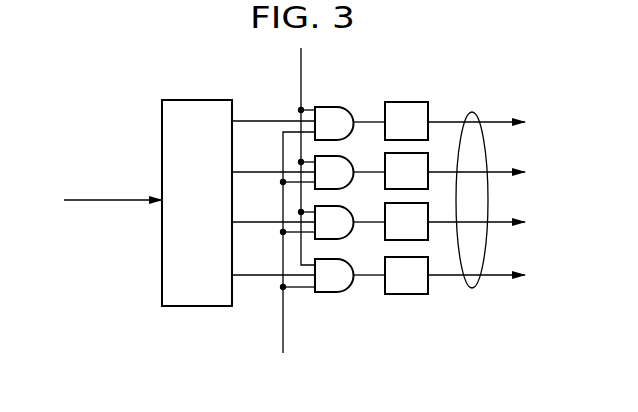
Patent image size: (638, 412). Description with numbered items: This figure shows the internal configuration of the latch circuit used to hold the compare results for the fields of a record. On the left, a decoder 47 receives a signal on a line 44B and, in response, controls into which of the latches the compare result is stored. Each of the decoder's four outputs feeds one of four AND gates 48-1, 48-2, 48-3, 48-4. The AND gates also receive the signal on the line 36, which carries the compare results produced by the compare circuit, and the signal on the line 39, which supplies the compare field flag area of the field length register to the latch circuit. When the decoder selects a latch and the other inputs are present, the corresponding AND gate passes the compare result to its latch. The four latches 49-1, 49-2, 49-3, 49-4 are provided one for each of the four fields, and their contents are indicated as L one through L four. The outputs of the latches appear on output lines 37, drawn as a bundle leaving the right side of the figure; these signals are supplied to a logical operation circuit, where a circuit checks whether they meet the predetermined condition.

The decoder 47 is at (205, 100).
The line 44B is at (107, 201).
The line 36 is at (301, 88).
The line 39 is at (283, 320).
The AND gate 48-1 is at (330, 106).
The AND gate 48-2 is at (350, 156).
The AND gate 48-3 is at (348, 240).
The AND gate 48-4 is at (325, 294).
The latch 49-1 is at (408, 102).
The latch 49-2 is at (430, 153).
The latch 49-3 is at (430, 241).
The latch 49-4 is at (415, 295).
The output lines 37 is at (485, 113).